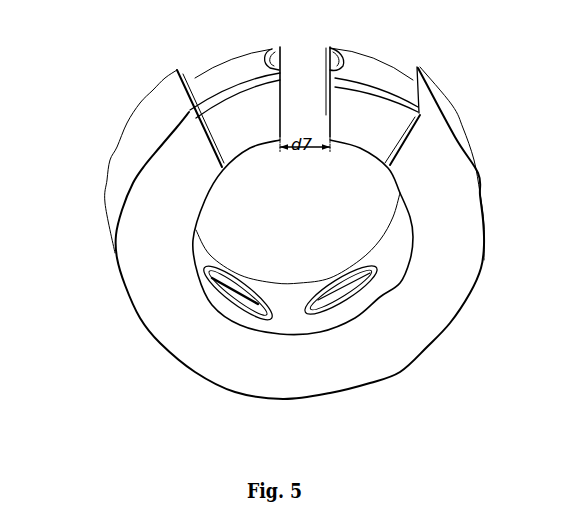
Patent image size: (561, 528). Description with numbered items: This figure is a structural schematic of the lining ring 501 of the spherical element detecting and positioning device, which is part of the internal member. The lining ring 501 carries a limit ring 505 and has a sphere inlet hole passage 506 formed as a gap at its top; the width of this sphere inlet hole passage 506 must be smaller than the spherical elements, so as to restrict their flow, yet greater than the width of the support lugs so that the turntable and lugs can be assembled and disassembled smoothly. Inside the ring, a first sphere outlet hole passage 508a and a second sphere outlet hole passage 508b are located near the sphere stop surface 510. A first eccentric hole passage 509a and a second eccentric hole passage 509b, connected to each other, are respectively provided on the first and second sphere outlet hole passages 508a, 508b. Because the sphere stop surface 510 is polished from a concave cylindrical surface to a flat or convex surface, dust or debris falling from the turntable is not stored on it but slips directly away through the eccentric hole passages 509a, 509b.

The lining ring 501 is at (147, 200).
The limit ring 505 is at (212, 88).
The sphere inlet hole passage 506 is at (270, 66).
The first sphere outlet hole passage 508a is at (232, 297).
The second sphere outlet hole passage 508b is at (340, 302).
The first eccentric hole passage 509a is at (260, 307).
The second eccentric hole passage 509b is at (322, 308).
The sphere stop surface 510 is at (294, 307).